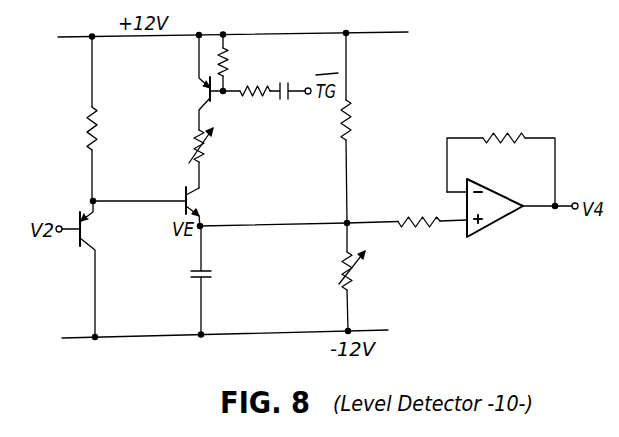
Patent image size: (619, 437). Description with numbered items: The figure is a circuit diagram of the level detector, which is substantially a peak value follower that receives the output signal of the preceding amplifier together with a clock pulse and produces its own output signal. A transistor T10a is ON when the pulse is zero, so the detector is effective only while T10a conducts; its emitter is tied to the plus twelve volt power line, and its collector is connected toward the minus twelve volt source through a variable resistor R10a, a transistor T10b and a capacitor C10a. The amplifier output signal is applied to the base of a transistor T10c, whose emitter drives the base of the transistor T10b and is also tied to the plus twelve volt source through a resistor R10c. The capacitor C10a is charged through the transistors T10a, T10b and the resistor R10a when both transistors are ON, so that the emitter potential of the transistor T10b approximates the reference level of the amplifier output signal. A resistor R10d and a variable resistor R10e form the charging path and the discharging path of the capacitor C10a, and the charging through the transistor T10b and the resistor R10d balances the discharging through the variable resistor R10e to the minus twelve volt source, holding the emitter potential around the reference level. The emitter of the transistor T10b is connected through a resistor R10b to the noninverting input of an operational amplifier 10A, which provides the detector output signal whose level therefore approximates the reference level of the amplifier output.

The variable resistor R10a is at (211, 149).
The resistor R10b is at (419, 217).
The resistor R10c is at (100, 129).
The resistor R10d is at (357, 119).
The variable resistor R10e is at (358, 277).
The transistor T10a is at (200, 84).
The transistor T10b is at (203, 203).
The transistor T10c is at (76, 248).
The capacitor C10a is at (221, 280).
The operational amplifier 10A is at (492, 219).